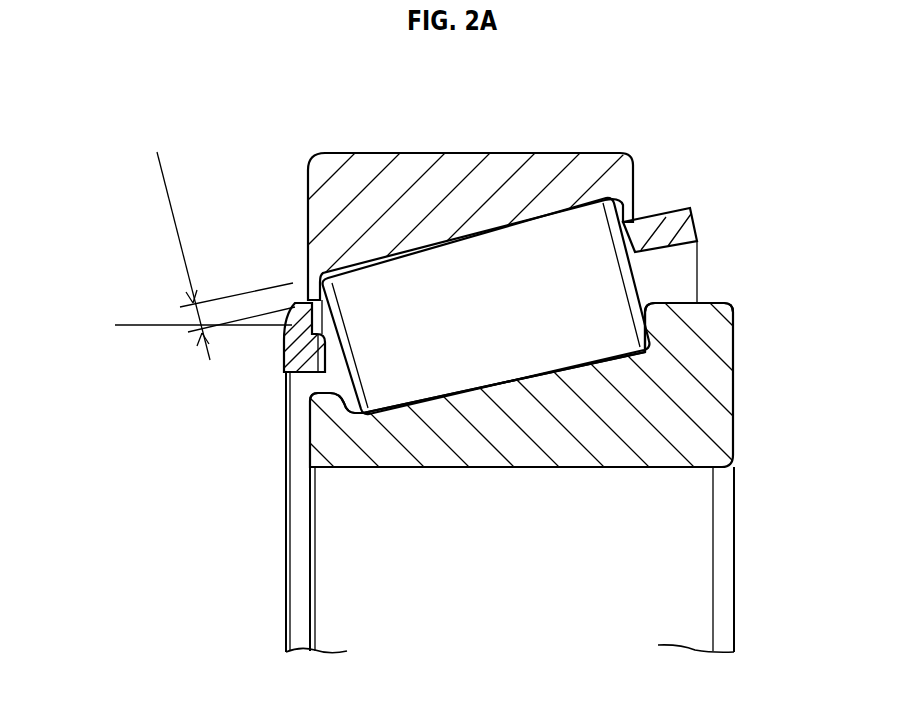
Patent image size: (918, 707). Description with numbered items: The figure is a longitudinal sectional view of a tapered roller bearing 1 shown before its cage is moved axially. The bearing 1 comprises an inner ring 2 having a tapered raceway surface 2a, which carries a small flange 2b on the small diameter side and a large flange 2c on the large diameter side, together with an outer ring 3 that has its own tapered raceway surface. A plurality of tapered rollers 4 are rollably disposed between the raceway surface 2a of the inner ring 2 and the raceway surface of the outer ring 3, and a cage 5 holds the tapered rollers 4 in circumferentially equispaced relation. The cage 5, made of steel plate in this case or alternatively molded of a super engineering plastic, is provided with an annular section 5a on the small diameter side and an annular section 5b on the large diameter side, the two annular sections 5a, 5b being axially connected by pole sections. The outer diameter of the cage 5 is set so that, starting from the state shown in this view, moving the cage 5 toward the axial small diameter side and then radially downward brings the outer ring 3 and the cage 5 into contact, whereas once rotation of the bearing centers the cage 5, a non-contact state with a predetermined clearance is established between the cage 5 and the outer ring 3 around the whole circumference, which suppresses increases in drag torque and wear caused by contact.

The tapered roller bearing 1 is at (302, 140).
The inner ring 2 is at (720, 380).
The raceway surface 2a is at (493, 372).
The small flange 2b is at (325, 407).
The large flange 2c is at (658, 320).
The outer ring 3 is at (368, 163).
The tapered rollers 4 is at (432, 380).
The cage 5 is at (663, 208).
The annular section on the small diameter side 5a is at (283, 363).
The annular section on the large diameter side 5b is at (690, 226).